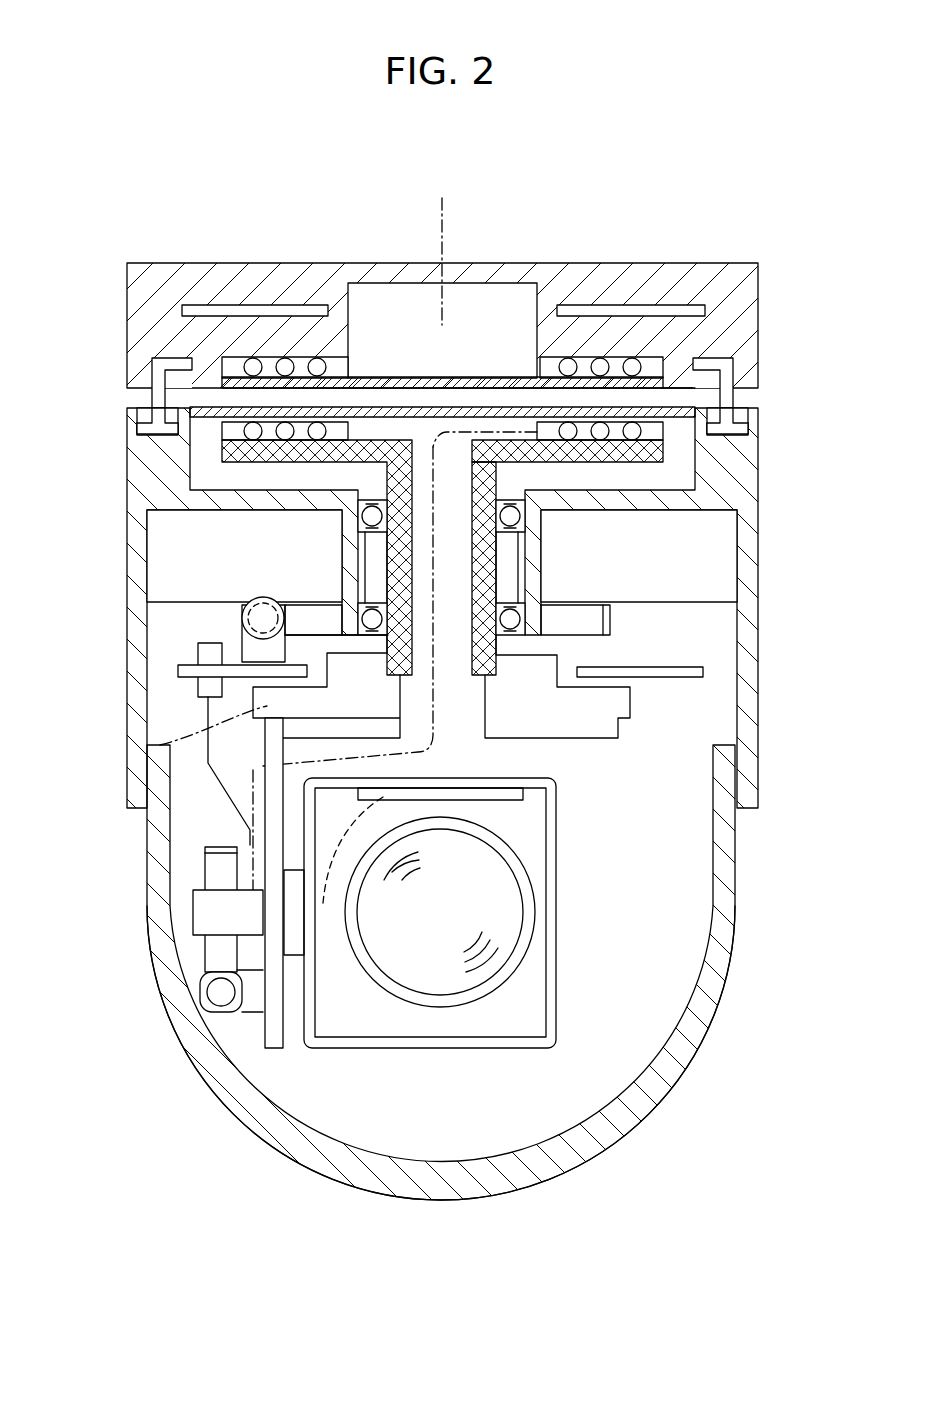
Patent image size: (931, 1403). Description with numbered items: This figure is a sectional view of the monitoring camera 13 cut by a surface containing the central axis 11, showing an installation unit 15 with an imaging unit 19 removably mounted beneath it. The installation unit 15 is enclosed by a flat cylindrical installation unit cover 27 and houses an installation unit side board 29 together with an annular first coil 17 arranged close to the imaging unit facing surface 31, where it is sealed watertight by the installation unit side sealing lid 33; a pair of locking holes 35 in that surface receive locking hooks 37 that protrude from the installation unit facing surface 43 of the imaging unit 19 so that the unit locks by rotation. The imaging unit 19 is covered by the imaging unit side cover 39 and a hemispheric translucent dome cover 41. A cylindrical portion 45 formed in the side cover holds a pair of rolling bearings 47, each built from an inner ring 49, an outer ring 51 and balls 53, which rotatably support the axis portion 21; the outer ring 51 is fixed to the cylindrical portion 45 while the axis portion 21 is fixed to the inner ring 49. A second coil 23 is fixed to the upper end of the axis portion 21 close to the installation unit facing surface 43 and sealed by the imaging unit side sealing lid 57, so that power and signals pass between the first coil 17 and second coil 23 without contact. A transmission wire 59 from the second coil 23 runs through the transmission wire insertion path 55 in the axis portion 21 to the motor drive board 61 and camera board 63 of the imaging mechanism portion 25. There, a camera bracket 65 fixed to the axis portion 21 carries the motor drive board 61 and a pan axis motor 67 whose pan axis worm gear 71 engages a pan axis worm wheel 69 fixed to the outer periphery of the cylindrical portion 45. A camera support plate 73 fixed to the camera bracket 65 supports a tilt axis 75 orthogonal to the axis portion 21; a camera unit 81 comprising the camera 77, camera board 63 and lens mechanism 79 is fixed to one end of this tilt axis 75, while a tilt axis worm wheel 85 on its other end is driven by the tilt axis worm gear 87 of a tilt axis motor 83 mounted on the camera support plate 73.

The central axis 11 is at (444, 210).
The monitoring camera 13 is at (282, 218).
The installation unit 15 is at (776, 260).
The first coil 17 is at (662, 356).
The imaging unit 19 is at (766, 620).
The axis portion 21 is at (542, 562).
The second coil 23 is at (668, 432).
The imaging mechanism portion 25 is at (693, 950).
The installation unit cover 27 is at (715, 263).
The installation unit side board 29 is at (605, 332).
The imaging unit facing surface 31 is at (748, 393).
The installation unit side sealing lid 33 is at (528, 383).
The locking hole 35 is at (150, 362).
The locking hook 37 is at (736, 360).
The imaging unit side cover 39 is at (128, 466).
The dome cover 41 is at (600, 1156).
The installation unit facing surface 43 is at (137, 404).
The cylindrical portion 45 is at (350, 540).
The rolling bearing 47 is at (538, 525).
The inner ring 49 is at (480, 655).
The outer ring 51 is at (560, 634).
The ball 53 is at (562, 668).
The transmission wire insertion path 55 is at (440, 678).
The imaging unit side sealing lid 57 is at (395, 400).
The transmission wire 59 is at (437, 480).
The motor drive board 61 is at (198, 665).
The camera board 63 is at (500, 802).
The camera bracket 65 is at (300, 716).
The pan axis motor 67 is at (258, 663).
The pan axis worm wheel 69 is at (612, 630).
The pan axis worm gear 71 is at (250, 604).
The camera support plate 73 is at (272, 1050).
The tilt axis 75 is at (193, 912).
The camera 77 is at (372, 1050).
The lens mechanism 79 is at (436, 1015).
The camera unit 81 is at (566, 1050).
The tilt axis motor 83 is at (246, 1010).
The tilt axis worm wheel 85 is at (215, 855).
The tilt axis worm gear 87 is at (218, 994).